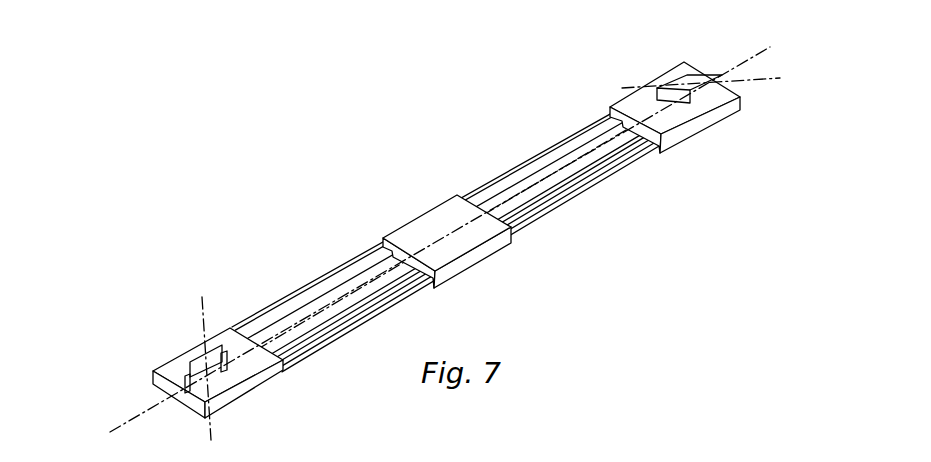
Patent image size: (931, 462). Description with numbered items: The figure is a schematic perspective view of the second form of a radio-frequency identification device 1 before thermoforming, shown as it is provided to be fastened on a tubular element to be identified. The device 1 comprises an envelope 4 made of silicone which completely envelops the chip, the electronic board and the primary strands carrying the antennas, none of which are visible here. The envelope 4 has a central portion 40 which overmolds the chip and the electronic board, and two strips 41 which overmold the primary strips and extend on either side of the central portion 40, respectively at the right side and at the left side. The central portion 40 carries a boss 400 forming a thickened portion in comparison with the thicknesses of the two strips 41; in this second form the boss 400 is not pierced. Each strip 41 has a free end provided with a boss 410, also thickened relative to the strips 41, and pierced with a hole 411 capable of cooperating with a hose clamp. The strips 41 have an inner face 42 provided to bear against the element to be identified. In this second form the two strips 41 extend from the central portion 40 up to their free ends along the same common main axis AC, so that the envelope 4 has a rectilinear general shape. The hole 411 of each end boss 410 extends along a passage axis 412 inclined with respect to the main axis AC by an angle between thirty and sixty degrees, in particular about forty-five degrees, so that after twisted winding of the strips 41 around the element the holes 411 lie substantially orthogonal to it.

The radio-frequency identification device 1 is at (453, 222).
The envelope 4 is at (343, 265).
The strips 41 is at (312, 303).
The inner face 42 is at (525, 187).
The central portion 40 is at (426, 216).
The boss 400 is at (448, 220).
The boss 410 is at (232, 342).
The hole 411 is at (207, 370).
The passage axis 412 is at (200, 312).
The main axis AC is at (762, 52).